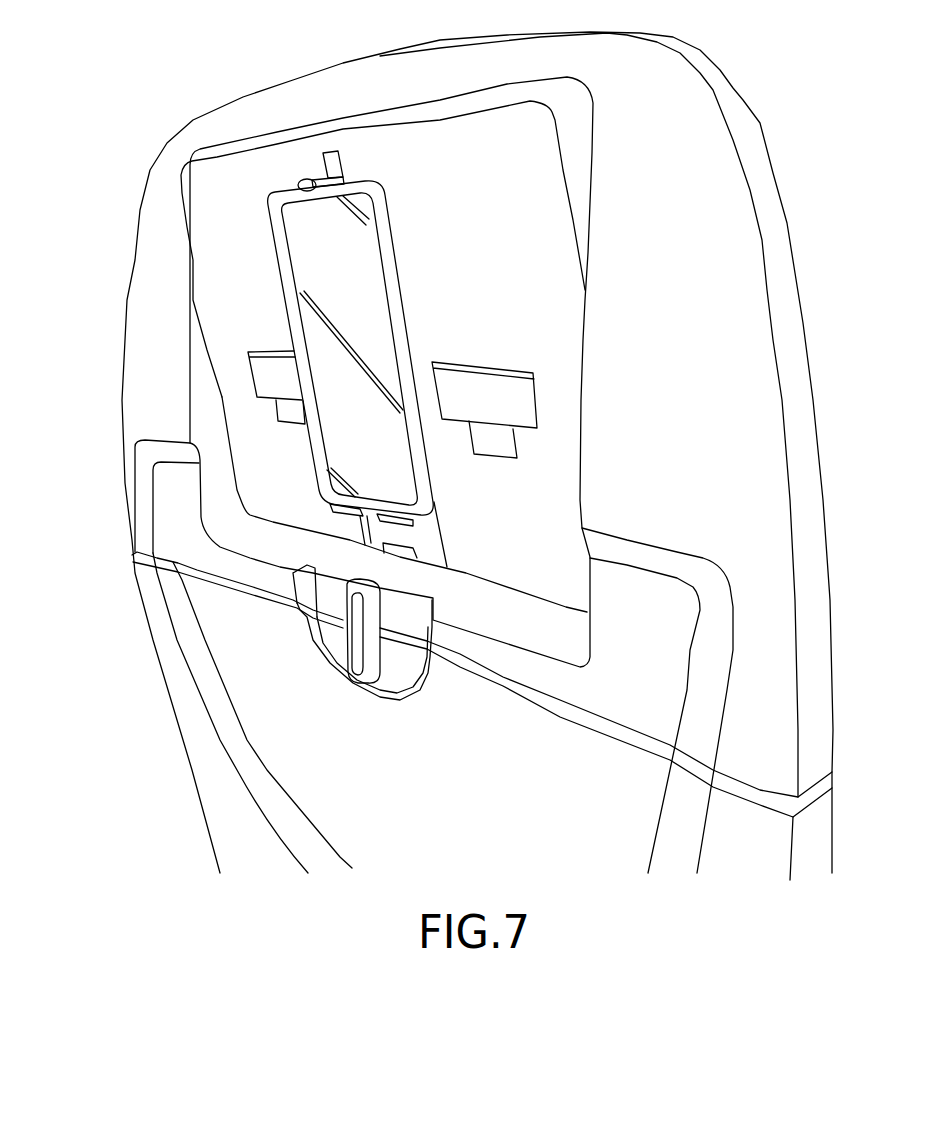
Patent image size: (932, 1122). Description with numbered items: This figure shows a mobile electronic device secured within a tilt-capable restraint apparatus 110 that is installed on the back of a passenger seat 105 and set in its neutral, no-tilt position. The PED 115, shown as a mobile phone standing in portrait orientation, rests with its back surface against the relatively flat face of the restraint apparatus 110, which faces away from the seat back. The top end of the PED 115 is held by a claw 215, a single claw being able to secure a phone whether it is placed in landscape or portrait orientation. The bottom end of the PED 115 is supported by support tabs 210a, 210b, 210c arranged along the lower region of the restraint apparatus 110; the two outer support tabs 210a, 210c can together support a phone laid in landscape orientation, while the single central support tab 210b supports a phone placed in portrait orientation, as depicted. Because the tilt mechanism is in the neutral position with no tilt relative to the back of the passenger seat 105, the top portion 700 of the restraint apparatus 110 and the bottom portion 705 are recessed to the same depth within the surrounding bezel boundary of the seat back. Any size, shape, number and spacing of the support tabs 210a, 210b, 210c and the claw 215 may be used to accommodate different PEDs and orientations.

The passenger seat 105 is at (145, 257).
The restraint apparatus 110 is at (623, 343).
The PED 115 is at (297, 213).
The claw 215 is at (329, 158).
The top portion of the restraint apparatus 700 is at (207, 213).
The bottom portion of the restraint apparatus 705 is at (257, 475).
The support tab 210a is at (270, 382).
The support tab 210b is at (400, 523).
The support tab 210c is at (515, 400).